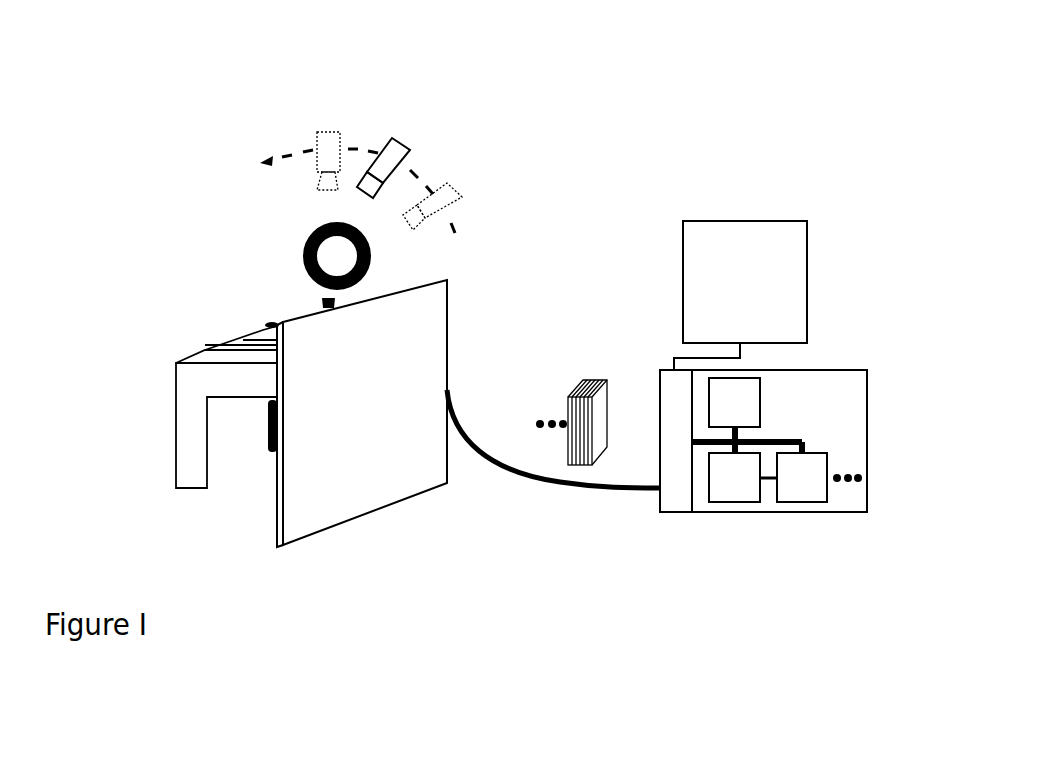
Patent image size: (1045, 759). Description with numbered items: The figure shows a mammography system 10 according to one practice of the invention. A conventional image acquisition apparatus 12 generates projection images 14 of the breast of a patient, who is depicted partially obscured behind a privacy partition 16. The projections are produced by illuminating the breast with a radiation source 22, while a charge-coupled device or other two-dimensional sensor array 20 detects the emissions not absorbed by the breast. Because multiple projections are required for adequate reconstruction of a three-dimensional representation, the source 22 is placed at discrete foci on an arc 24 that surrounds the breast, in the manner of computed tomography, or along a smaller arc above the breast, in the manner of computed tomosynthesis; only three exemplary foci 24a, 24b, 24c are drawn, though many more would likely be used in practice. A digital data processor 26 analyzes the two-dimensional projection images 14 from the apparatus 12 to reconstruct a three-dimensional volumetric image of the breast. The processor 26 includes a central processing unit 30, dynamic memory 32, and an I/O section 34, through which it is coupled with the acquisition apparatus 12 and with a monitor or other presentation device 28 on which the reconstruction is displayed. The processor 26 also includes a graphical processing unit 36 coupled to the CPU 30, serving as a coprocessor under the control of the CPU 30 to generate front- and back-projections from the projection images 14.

The mammography system 10 is at (800, 57).
The image acquisition apparatus 12 is at (497, 212).
The projection images 14 is at (582, 383).
The privacy partition 16 is at (340, 510).
The 2D sensor array 20 is at (237, 342).
The radiation source 22 is at (397, 145).
The arc 24 is at (287, 155).
The focus 24a is at (432, 206).
The focus 24b is at (383, 168).
The focus 24c is at (328, 161).
The digital data processor 26 is at (807, 370).
The presentation device 28 is at (713, 220).
The central processing unit 30 is at (735, 495).
The dynamic memory 32 is at (748, 383).
The I/O section 34 is at (672, 502).
The graphical processing unit 36 is at (818, 468).